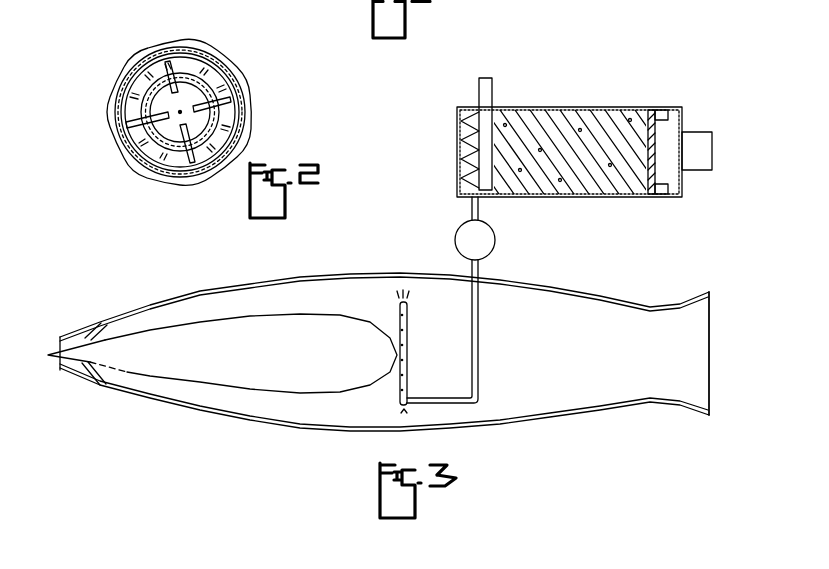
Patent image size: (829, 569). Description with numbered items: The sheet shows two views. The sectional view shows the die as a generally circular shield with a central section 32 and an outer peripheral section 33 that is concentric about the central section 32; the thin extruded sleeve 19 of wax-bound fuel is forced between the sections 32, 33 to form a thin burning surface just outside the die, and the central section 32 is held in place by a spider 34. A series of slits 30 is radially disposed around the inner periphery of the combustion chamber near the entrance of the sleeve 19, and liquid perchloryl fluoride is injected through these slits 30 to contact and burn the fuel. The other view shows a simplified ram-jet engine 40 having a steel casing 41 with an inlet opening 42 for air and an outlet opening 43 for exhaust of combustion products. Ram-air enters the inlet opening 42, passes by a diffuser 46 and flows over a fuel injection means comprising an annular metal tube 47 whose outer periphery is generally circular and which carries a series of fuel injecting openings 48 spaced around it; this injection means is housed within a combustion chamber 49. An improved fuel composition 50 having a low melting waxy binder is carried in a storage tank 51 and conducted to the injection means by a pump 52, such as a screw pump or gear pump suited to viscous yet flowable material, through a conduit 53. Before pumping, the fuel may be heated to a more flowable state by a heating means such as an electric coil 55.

In FIG. 2, the extruded sleeve 19 is at (205, 118).
In FIG. 2, the slits 30 is at (208, 53).
In FIG. 2, the central section 32 is at (212, 110).
In FIG. 2, the outer peripheral section 33 is at (233, 80).
In FIG. 2, the spider 34 is at (205, 156).
In FIG. 3, the ram-jet engine 40 is at (317, 273).
In FIG. 3, the steel casing 41 is at (230, 284).
In FIG. 3, the inlet opening 42 is at (53, 350).
In FIG. 3, the outlet opening 43 is at (712, 294).
In FIG. 3, the diffuser 46 is at (201, 331).
In FIG. 3, the annular metal tube 47 is at (405, 335).
In FIG. 3, the fuel injecting openings 48 is at (403, 377).
In FIG. 3, the combustion chamber 49 is at (517, 322).
In FIG. 3, the fuel composition 50 is at (567, 183).
In FIG. 3, the storage tank 51 is at (600, 198).
In FIG. 3, the pump 52 is at (455, 240).
In FIG. 3, the conduit 53 is at (479, 259).
In FIG. 3, the electric coil 55 is at (487, 80).